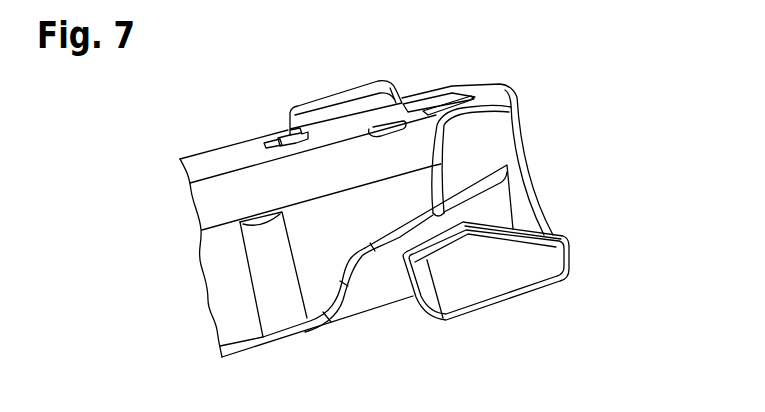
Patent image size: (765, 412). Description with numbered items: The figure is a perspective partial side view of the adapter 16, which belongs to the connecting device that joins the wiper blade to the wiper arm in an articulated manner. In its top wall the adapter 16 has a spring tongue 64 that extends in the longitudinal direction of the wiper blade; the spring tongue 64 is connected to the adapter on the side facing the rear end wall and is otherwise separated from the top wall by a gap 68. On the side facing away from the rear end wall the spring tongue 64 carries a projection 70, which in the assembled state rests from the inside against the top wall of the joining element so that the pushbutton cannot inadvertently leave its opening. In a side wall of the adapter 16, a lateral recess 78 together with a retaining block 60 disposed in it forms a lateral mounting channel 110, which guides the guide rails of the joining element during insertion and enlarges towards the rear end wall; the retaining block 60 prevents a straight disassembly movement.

The adapter 16 is at (132, 196).
The projection 70 is at (304, 139).
The spring tongue 64 is at (433, 100).
The gap 68 is at (453, 103).
The lateral recess 78 is at (372, 286).
The mounting channel 110 is at (495, 207).
The retaining block 60 is at (490, 282).